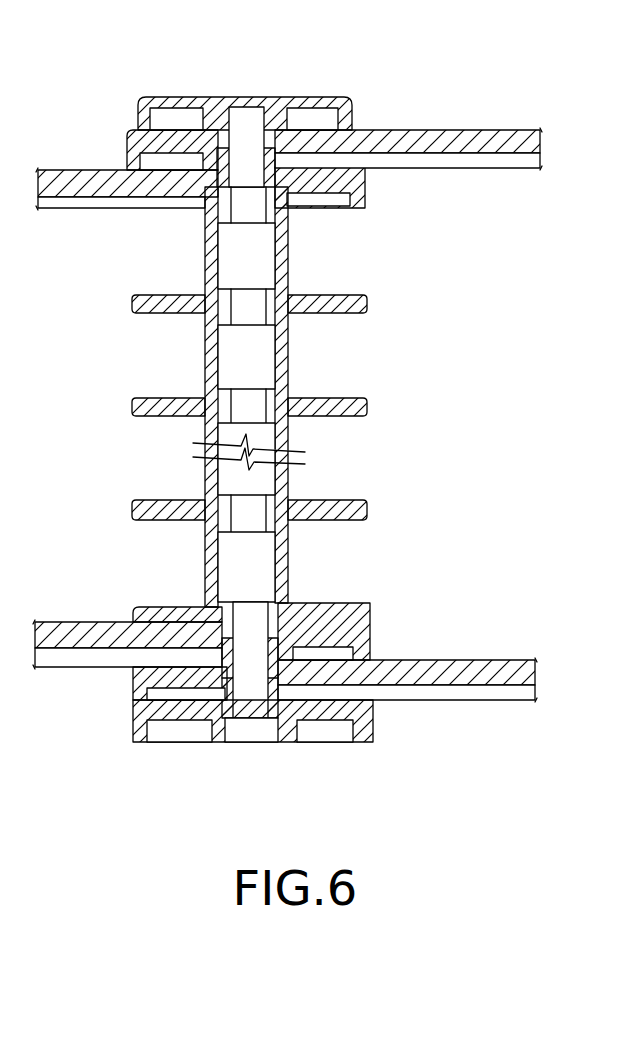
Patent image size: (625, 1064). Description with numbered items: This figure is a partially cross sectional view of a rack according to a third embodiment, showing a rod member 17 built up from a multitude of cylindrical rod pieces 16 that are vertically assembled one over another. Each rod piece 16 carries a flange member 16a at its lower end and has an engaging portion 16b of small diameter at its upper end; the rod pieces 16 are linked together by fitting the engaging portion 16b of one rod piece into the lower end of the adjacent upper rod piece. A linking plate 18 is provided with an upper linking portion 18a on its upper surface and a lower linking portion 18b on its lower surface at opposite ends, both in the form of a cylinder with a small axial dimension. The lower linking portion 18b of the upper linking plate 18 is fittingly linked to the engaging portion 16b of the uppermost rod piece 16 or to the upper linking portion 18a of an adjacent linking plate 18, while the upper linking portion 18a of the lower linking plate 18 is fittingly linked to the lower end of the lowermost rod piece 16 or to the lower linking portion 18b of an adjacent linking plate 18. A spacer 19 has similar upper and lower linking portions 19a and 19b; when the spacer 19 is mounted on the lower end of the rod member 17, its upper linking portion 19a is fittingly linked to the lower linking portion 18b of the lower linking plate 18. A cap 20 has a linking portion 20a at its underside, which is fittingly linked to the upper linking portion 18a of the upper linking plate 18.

The cylindrical rod piece 16 is at (204, 277).
The flange member 16a is at (132, 508).
The engaging portion 16b is at (203, 210).
The rod member 17 is at (116, 411).
The linking plate 18 is at (71, 170).
The upper linking portion 18a is at (246, 140).
The lower linking portion 18b is at (288, 200).
The spacer 19 is at (133, 730).
The upper linking portion 19a is at (133, 693).
The lower linking portion 19b is at (204, 743).
The cap 20 is at (155, 97).
The linking portion 20a is at (303, 96).